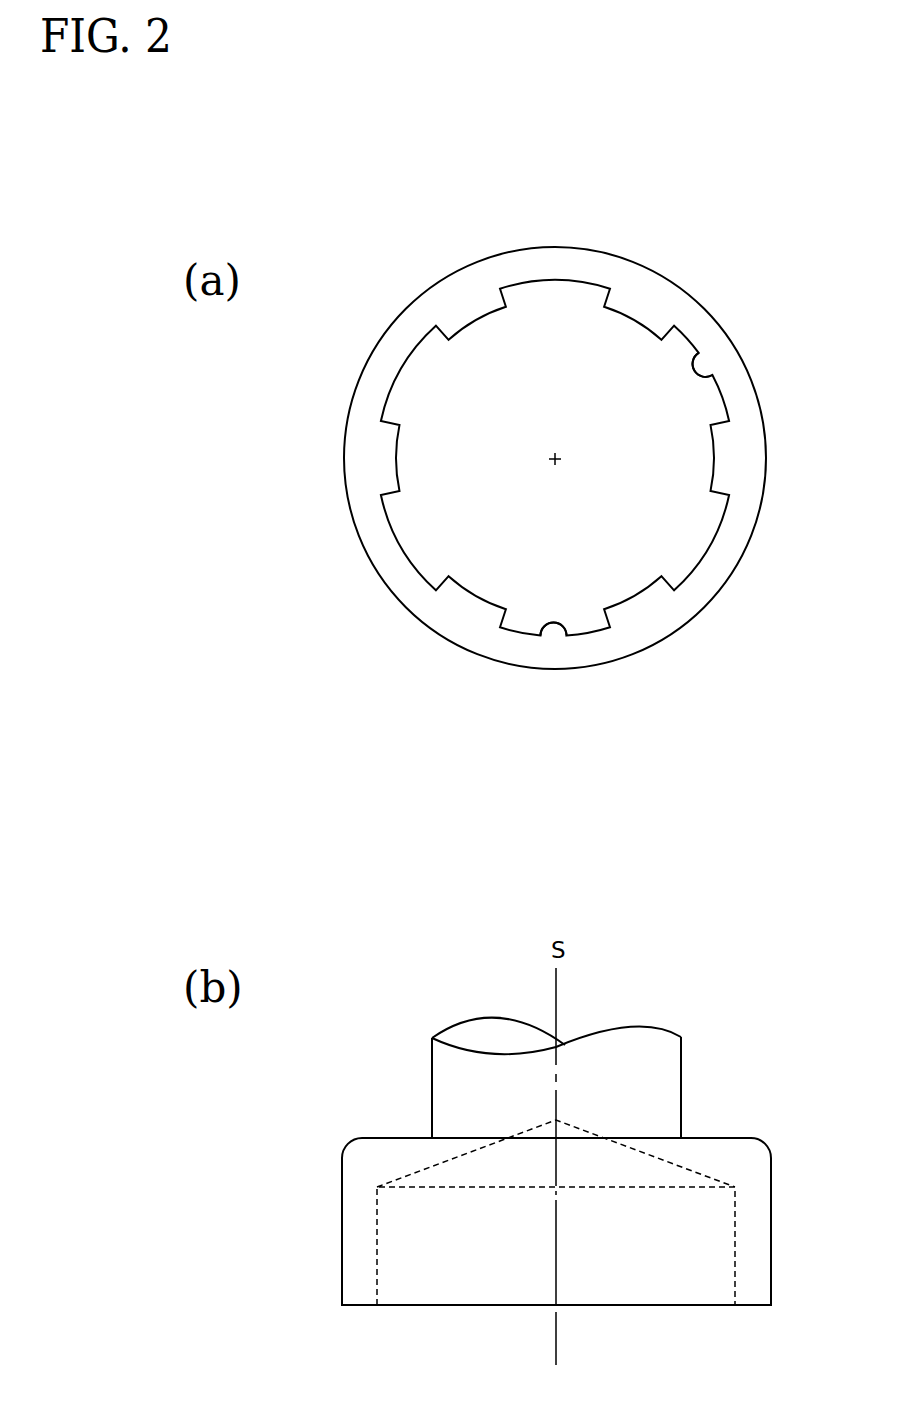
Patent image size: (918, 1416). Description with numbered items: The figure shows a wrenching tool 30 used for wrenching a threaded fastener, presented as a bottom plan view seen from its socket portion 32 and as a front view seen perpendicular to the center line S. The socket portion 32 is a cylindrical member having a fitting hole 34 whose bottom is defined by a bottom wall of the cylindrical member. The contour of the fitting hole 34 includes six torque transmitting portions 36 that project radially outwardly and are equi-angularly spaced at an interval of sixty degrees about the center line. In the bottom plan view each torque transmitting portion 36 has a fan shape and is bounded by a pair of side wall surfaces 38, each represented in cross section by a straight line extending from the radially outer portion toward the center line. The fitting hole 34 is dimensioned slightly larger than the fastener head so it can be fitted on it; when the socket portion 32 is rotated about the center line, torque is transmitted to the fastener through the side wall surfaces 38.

The wrenching tool 30 is at (687, 272).
The socket portion 32 is at (760, 1228).
The fitting hole 34 is at (600, 518).
The torque transmitting portions 36 is at (700, 378).
The side wall surfaces 38 is at (668, 343).